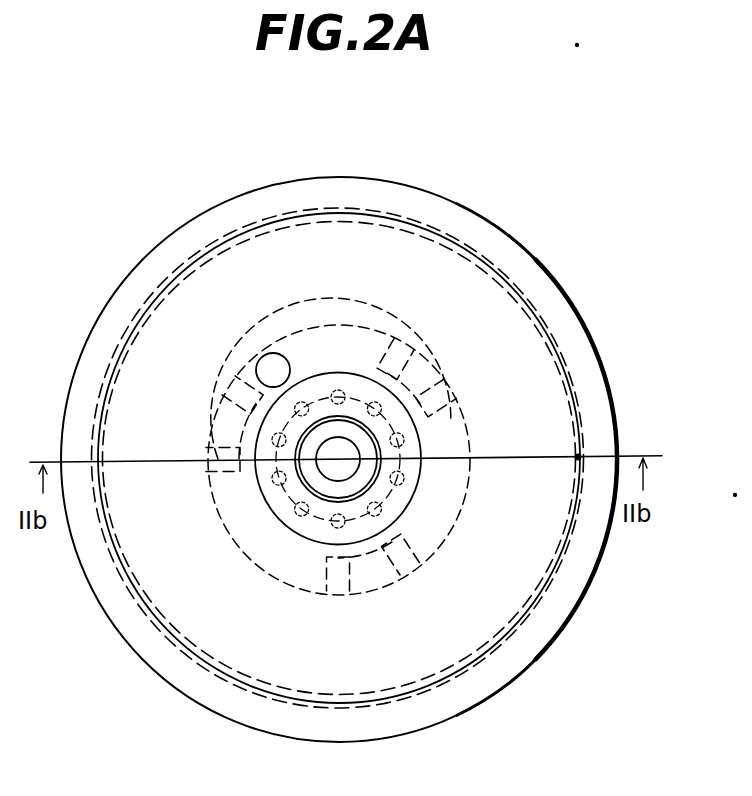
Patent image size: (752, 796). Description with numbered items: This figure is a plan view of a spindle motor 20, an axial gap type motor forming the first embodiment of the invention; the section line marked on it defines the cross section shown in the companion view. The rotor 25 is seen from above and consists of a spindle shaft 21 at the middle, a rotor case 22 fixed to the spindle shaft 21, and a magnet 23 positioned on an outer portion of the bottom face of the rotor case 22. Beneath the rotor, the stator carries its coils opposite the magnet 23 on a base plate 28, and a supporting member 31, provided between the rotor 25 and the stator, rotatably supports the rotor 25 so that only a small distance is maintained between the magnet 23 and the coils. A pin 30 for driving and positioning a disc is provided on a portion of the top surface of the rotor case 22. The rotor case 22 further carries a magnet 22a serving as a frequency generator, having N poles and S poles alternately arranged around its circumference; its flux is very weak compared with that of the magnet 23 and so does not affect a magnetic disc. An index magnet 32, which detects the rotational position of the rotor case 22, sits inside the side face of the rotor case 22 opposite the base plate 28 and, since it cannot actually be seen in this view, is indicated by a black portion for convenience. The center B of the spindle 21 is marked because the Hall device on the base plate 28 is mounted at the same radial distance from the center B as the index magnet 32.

The spindle motor 20 is at (432, 134).
The rotor 25 is at (441, 191).
The base plate 28 is at (563, 212).
The rotor case 22 is at (480, 295).
The magnet 22a is at (610, 540).
The magnet 23 is at (515, 350).
The index magnet 32 is at (578, 455).
The spindle shaft 21 is at (328, 437).
The center B is at (325, 477).
The pin 30 is at (256, 371).
The supporting member 31 is at (400, 484).